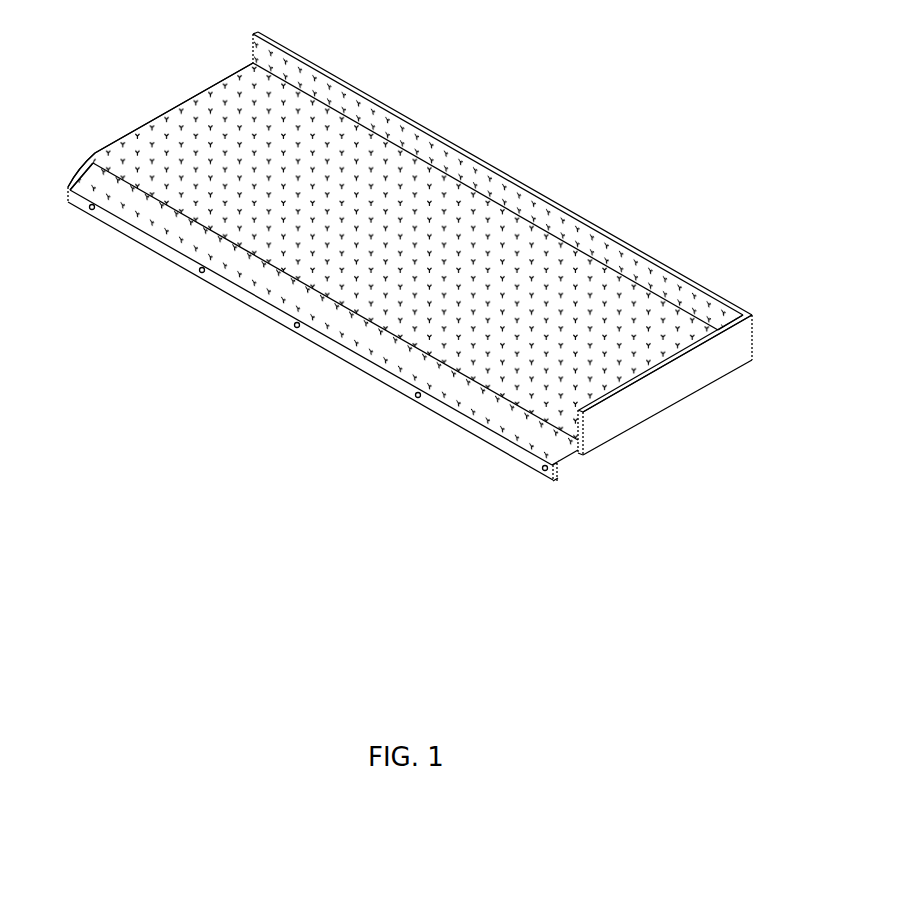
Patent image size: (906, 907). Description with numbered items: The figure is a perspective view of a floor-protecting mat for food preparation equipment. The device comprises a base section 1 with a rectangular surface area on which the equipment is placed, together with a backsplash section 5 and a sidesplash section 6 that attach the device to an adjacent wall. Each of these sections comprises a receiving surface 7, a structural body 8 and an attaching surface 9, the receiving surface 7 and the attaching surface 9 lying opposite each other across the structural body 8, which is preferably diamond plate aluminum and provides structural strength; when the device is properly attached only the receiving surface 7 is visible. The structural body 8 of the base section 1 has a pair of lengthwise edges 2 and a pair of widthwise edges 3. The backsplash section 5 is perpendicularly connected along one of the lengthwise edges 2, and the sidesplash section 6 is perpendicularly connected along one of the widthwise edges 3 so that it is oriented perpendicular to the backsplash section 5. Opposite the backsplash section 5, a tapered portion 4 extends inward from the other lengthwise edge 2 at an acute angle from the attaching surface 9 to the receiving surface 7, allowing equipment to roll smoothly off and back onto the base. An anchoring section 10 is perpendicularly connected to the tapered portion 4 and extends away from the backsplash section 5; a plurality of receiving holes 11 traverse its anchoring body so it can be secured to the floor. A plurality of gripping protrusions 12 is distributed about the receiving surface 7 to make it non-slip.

The base section 1 is at (148, 114).
The pair of lengthwise edges 2 is at (337, 108).
The pair of widthwise edges 3 is at (222, 81).
The tapered portion 4 is at (570, 456).
The backsplash section 5 is at (648, 238).
The sidesplash section 6 is at (658, 422).
The receiving surface 7 is at (477, 408).
The structural body 8 is at (427, 127).
The attaching surface 9 is at (710, 367).
The anchoring section 10 is at (260, 305).
The plurality of receiving holes 11 is at (198, 274).
The plurality of gripping protrusions 12 is at (110, 147).